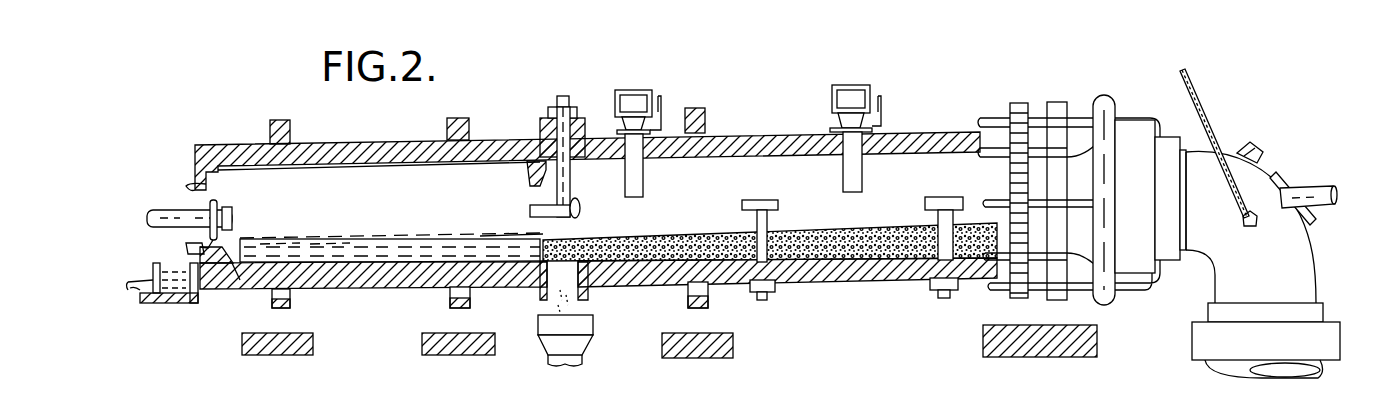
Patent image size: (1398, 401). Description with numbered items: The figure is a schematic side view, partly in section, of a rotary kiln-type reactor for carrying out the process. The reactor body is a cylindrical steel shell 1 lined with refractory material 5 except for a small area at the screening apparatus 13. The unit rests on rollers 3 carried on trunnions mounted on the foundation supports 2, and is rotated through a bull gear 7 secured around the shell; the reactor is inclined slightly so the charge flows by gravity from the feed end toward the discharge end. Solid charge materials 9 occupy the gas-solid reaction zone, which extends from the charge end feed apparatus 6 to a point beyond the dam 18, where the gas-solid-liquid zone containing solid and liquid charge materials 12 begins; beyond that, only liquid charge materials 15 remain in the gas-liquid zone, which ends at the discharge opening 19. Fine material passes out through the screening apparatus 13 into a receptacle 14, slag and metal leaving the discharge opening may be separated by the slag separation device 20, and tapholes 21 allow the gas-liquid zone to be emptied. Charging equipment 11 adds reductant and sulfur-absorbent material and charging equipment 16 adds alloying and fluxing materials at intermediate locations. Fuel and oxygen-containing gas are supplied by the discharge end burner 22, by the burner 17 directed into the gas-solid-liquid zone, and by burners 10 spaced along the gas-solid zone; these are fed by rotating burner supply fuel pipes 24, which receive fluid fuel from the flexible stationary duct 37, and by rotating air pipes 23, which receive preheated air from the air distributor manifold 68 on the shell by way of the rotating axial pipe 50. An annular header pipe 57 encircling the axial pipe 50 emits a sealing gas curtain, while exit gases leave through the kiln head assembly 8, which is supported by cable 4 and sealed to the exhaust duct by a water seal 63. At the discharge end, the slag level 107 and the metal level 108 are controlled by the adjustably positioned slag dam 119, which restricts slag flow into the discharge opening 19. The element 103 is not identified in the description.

The cylindrical steel shell 1 is at (730, 134).
The foundation supports 2 is at (313, 343).
The rollers 3 is at (291, 306).
The cable 4 is at (1211, 121).
The refractory material 5 is at (731, 150).
The charge end feed apparatus 6 is at (1265, 160).
The bull gear 7 is at (1012, 302).
The kiln head assembly 8 is at (1217, 262).
The solid charge materials 9 is at (650, 234).
The burners 10 is at (778, 203).
The charging equipment for reductant and sulfur-absorbent material 11 is at (840, 100).
The solid and liquid charge materials 12 is at (482, 236).
The screening apparatus 13 is at (556, 283).
The receptacle 14 is at (588, 322).
The liquid charge materials 15 is at (366, 250).
The charging equipment for alloying materials and fluxing materials 16 is at (628, 102).
The burner 17 is at (542, 208).
The dam 18 is at (543, 233).
The discharge opening 19 is at (215, 243).
The slag separation device 20 is at (177, 292).
The tapholes 21 is at (236, 286).
The discharge end burner 22 is at (165, 213).
The rotating air pipes 23 is at (1003, 148).
The burner supply fuel pipes 24 is at (997, 120).
The flexible stationary duct 37 is at (1218, 205).
The rotating axial pipe 50 is at (1313, 193).
The annular header pipe 57 is at (1313, 223).
The water seal 63 is at (1205, 342).
The air distributor manifold 68 is at (1112, 102).
The nozzle 103 is at (580, 209).
The slag level 107 is at (287, 226).
The metal level 108 is at (324, 243).
The adjustably positioned slag dam 119 is at (194, 241).